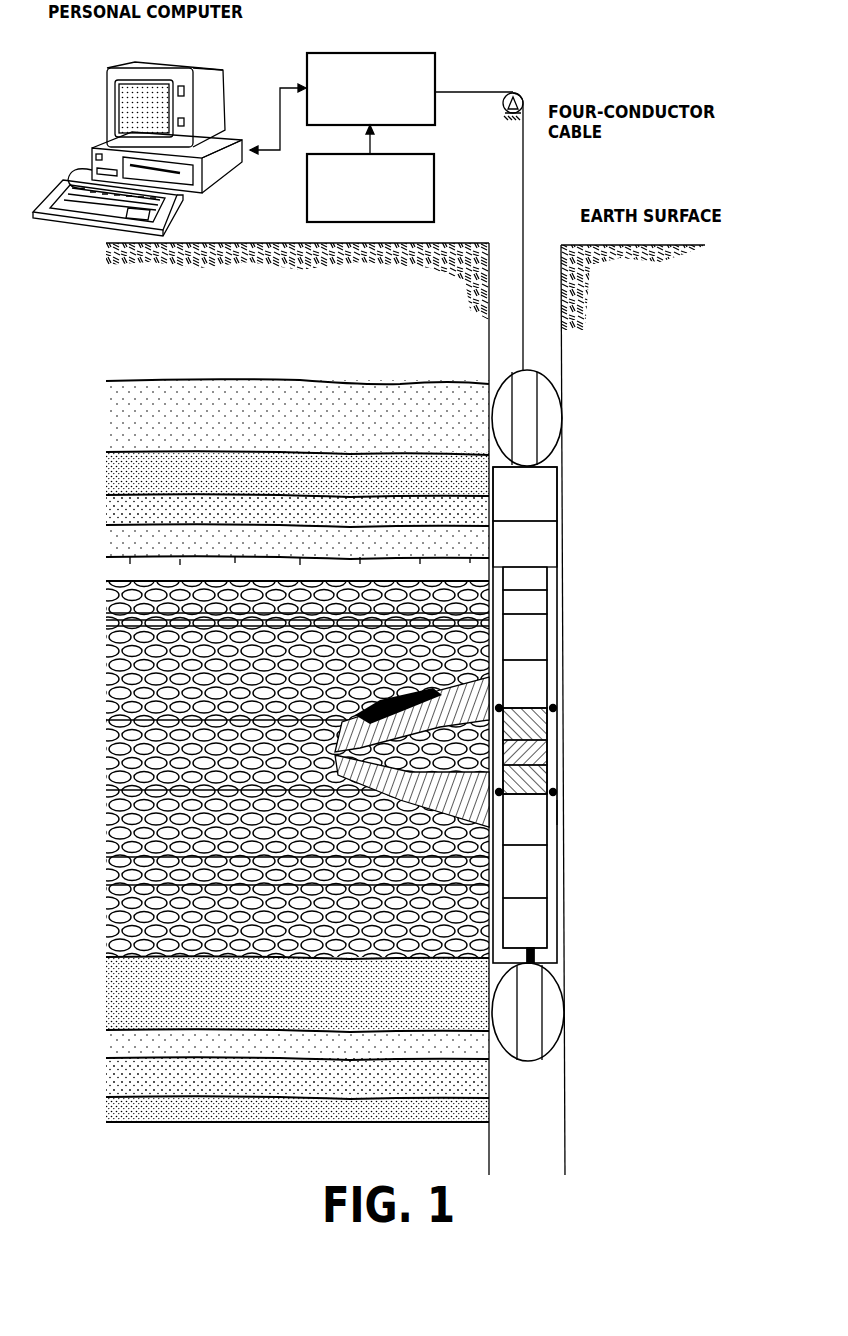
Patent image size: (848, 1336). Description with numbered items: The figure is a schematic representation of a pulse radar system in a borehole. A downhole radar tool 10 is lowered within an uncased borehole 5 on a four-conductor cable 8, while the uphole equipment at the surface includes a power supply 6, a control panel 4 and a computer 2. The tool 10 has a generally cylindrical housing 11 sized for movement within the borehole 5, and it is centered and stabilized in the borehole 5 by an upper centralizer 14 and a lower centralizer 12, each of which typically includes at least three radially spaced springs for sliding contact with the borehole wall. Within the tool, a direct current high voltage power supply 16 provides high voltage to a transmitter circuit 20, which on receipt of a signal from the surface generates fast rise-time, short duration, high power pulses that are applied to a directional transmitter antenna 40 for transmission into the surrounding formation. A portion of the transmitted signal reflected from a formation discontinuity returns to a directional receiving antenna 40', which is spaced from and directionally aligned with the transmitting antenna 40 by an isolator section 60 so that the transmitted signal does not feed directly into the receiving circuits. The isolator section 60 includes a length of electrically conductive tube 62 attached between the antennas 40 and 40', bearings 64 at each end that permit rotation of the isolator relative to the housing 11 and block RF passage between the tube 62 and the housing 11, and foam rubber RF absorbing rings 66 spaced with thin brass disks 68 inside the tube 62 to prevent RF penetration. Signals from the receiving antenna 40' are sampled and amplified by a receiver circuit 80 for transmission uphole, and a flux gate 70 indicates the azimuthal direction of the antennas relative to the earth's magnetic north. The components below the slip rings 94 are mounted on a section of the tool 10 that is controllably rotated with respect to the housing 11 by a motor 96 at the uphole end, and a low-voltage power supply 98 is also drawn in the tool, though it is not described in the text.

The computer 2 is at (203, 66).
The control panel 4 is at (389, 55).
The power supply 6 is at (434, 176).
The four-conductor cable 8 is at (525, 183).
The uncased borehole 5 is at (527, 709).
The downhole radar tool 10 is at (719, 660).
The upper centralizer 14 is at (572, 388).
The low-voltage power supply 98 is at (568, 485).
The motor 96 is at (570, 541).
The slip rings 94 is at (570, 576).
The receiver circuit 80 is at (570, 601).
The flux gate 70 is at (570, 643).
The directional receiving antenna 40' is at (585, 684).
The isolator section 60 is at (640, 736).
The thin brass disks 68 is at (547, 727).
The foam rubber RF absorbing rings 66 is at (547, 756).
The electrically conductive tube 62 is at (547, 781).
The bearings 64 is at (558, 814).
The directional transmitter antenna 40 is at (605, 829).
The transmitter circuit 20 is at (570, 882).
The direct current high voltage power supply 16 is at (570, 922).
The housing 11 is at (560, 955).
The lower centralizer 12 is at (572, 997).